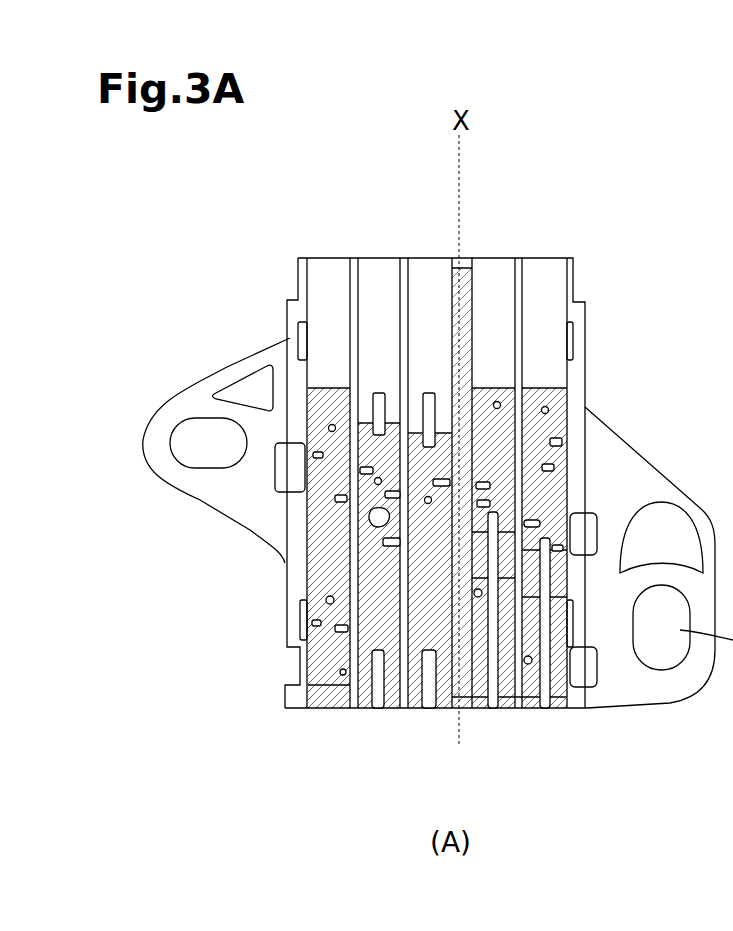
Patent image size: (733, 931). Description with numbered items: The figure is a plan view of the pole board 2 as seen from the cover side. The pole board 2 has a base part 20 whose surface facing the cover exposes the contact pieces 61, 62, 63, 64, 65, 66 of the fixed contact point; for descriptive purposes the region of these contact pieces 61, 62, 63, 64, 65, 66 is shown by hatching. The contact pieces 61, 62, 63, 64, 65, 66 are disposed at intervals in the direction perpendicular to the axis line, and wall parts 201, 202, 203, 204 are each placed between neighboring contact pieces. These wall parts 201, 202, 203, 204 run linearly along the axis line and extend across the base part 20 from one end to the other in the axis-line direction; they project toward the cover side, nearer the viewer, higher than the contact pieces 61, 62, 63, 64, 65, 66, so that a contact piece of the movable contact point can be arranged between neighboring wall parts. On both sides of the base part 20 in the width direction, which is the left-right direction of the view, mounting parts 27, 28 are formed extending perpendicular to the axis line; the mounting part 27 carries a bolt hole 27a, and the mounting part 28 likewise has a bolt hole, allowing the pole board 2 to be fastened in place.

The pole board 2 is at (610, 242).
The base part 20 is at (287, 617).
The mounting part 27 is at (171, 410).
The bolt hole 27a is at (208, 443).
The mounting part 28 is at (632, 683).
The contact piece 61 is at (322, 388).
The contact piece 62 is at (368, 420).
The contact piece 63 is at (418, 433).
The contact piece 64 is at (487, 388).
The contact piece 65 is at (541, 388).
The contact piece 66 is at (500, 697).
The wall part 201 is at (303, 257).
The wall part 202 is at (352, 257).
The wall part 203 is at (476, 283).
The wall part 204 is at (572, 257).